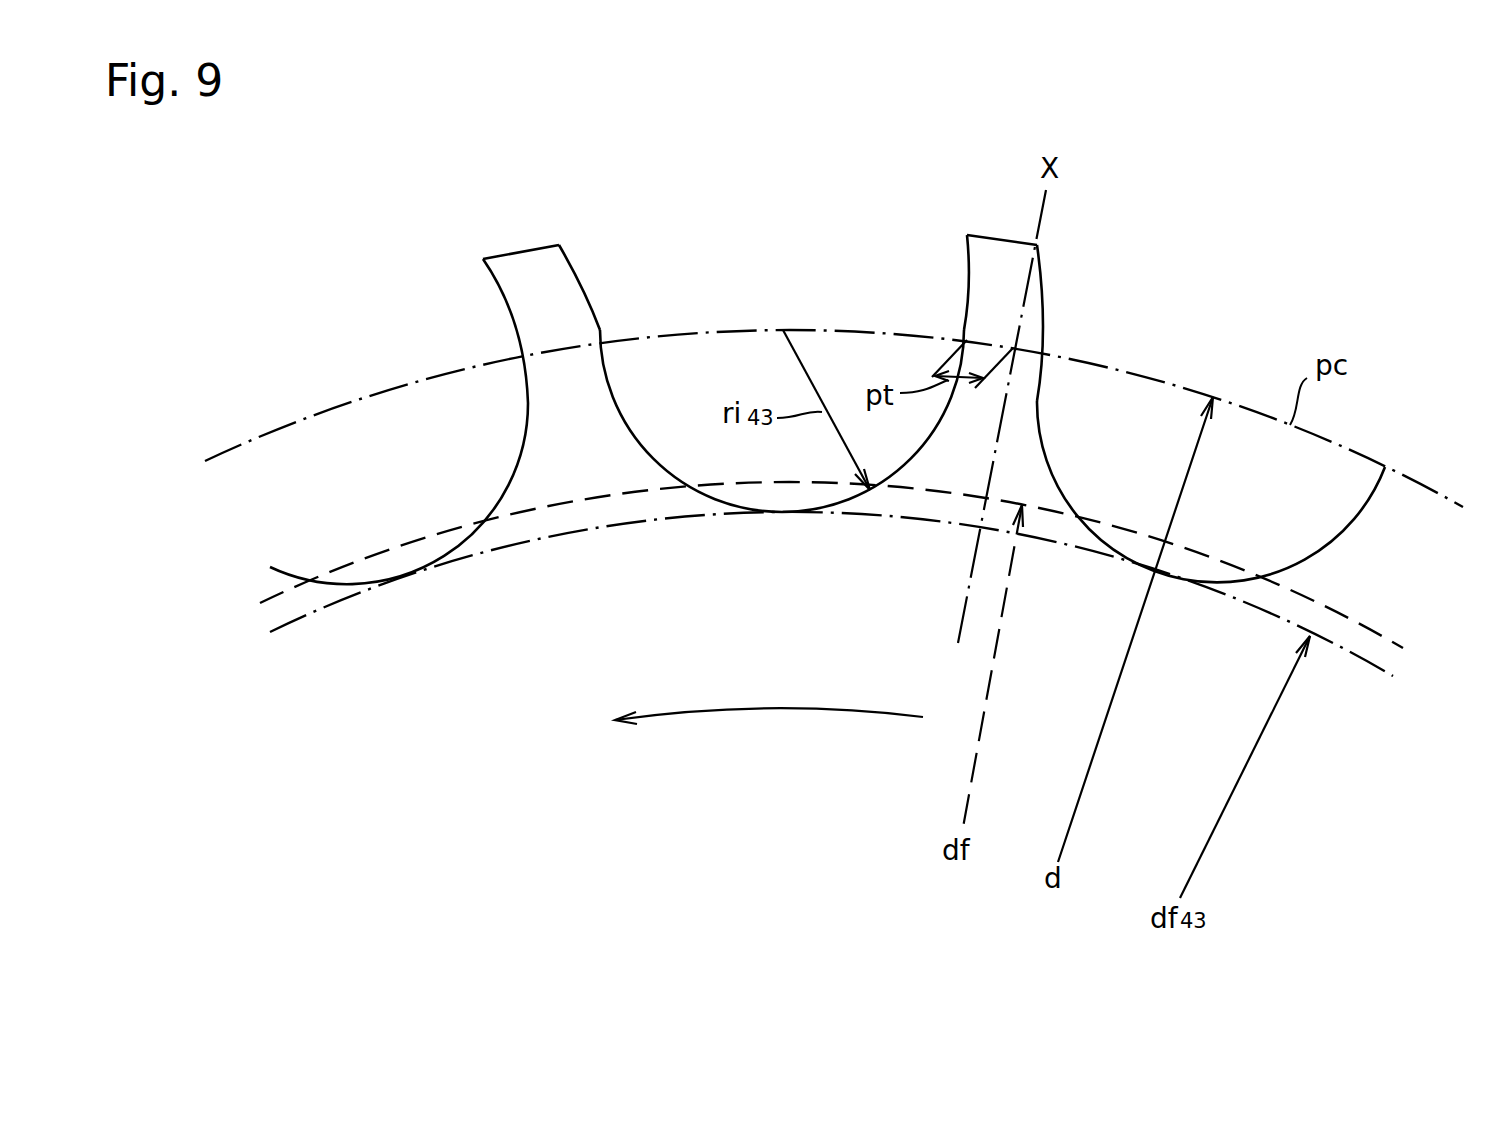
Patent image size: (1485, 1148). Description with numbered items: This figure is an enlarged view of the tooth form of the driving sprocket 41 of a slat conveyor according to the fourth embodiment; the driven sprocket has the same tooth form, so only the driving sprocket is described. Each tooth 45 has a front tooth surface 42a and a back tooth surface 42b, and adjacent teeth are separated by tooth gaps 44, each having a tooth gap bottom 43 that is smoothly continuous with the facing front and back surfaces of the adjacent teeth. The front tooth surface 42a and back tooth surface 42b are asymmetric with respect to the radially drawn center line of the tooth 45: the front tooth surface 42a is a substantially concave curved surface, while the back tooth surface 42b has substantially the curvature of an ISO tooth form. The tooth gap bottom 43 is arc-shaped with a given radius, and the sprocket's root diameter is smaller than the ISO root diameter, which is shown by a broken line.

The driving sprocket 41 is at (556, 689).
The front tooth surface 42a is at (498, 287).
The back tooth surface 42b is at (575, 268).
The tooth gap bottom 43 is at (385, 585).
The tooth gap 44 is at (707, 367).
The tooth 45 is at (522, 252).